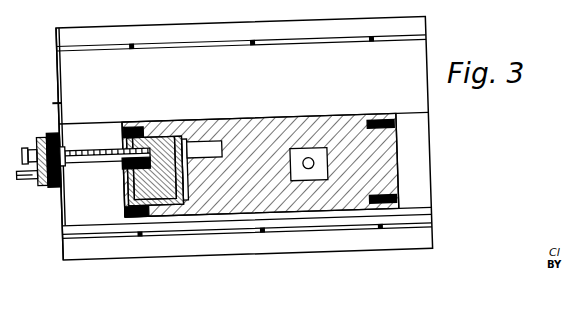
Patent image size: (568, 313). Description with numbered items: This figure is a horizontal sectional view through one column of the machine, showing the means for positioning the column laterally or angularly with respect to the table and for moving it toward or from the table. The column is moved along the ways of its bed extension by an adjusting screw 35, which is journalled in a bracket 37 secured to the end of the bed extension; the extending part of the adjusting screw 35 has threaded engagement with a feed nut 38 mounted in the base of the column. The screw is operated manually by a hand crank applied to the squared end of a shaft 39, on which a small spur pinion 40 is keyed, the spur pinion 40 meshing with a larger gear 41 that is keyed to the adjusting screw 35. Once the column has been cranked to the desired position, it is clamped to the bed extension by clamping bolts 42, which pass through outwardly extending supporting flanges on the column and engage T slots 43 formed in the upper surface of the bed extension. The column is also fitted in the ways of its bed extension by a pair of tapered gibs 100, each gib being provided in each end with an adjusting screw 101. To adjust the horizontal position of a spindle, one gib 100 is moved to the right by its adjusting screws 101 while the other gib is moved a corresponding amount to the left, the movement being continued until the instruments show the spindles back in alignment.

The adjusting screw 35 is at (93, 163).
The bracket 37 is at (55, 103).
The feed nut 38 is at (160, 127).
The shaft 39 is at (21, 179).
The spur pinion 40 is at (56, 176).
The gear 41 is at (56, 148).
The clamping bolt 42 is at (254, 52).
The T slot 43 is at (207, 52).
The tapered gib 100 is at (320, 123).
The adjusting screw 101 is at (120, 130).